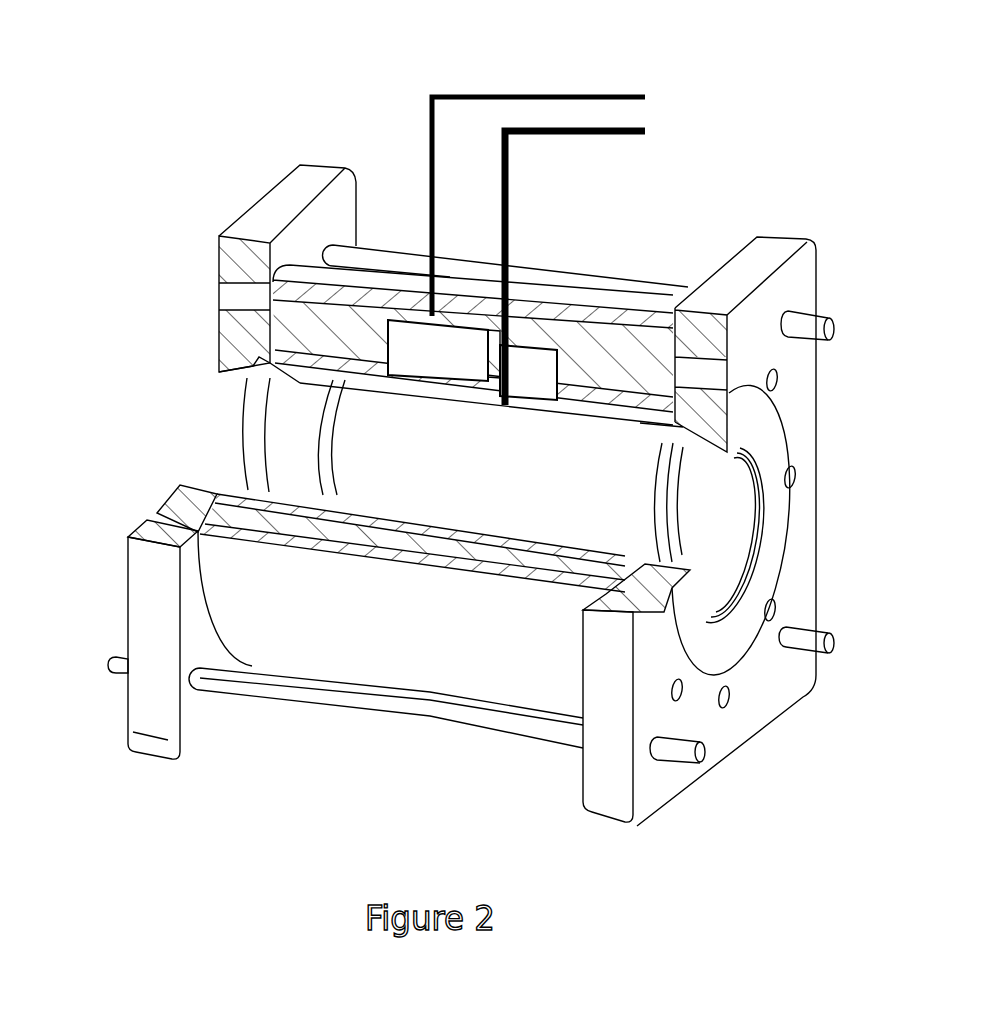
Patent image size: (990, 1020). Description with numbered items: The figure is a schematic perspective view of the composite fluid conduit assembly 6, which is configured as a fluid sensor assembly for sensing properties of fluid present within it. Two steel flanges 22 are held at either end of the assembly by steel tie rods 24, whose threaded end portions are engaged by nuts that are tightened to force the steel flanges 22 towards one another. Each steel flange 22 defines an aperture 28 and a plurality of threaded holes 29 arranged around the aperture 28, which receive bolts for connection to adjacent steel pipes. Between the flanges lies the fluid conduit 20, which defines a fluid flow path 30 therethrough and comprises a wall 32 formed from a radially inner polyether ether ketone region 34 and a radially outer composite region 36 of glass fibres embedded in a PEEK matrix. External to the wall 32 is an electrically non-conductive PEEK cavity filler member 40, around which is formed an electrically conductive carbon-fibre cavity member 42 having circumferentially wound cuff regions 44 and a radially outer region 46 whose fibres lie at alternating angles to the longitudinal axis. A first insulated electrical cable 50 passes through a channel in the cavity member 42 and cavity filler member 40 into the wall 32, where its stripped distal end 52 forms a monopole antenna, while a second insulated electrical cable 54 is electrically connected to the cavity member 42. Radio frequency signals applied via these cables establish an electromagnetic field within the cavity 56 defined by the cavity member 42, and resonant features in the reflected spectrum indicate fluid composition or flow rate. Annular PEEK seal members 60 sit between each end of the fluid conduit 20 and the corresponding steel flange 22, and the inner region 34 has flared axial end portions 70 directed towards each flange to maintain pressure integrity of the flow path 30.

The fluid conduit assembly 6 is at (288, 835).
The fluid conduit 20 is at (278, 630).
The steel flange 22 is at (263, 227).
The steel tie rod 24 is at (840, 333).
The aperture 28 is at (212, 432).
The threaded hole 29 is at (238, 298).
The fluid flow path 30 is at (333, 435).
The wall 32 is at (338, 382).
The radially inner polyether ether ketone (PEEK) region 34 is at (575, 420).
The radially outer composite region 36 is at (622, 425).
The cavity filler member 40 is at (423, 357).
The cavity member 42 is at (335, 688).
The cuff region 44 is at (343, 347).
The radially outer region 46 is at (527, 327).
The first insulated electrical cable 50 is at (623, 140).
The distal end 52 is at (509, 405).
The second insulated electrical cable 54 is at (617, 90).
The cavity 56 is at (639, 530).
The seal member 60 is at (256, 365).
The axial end portion 70 is at (293, 378).